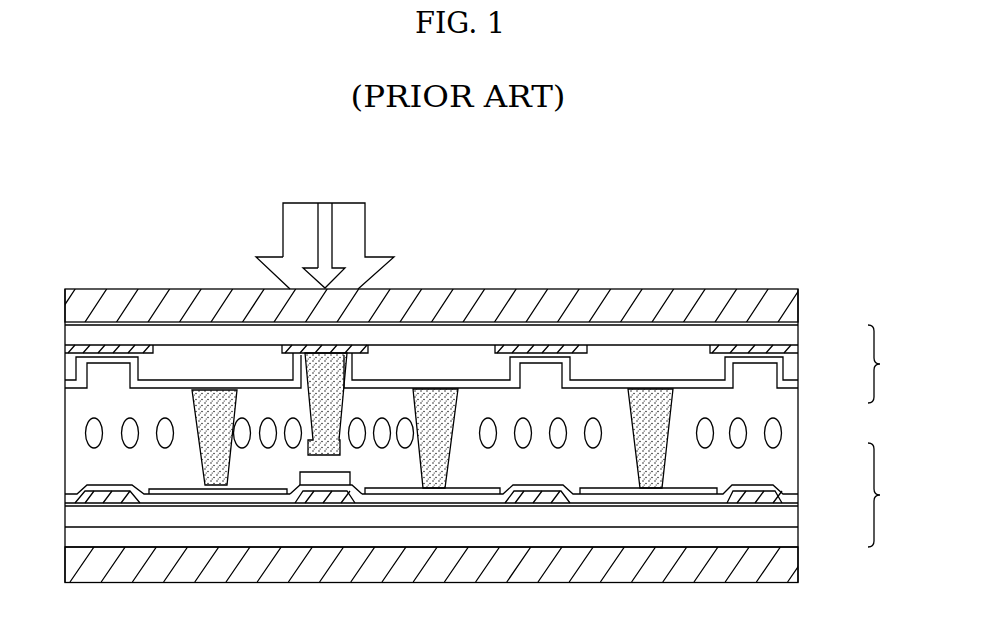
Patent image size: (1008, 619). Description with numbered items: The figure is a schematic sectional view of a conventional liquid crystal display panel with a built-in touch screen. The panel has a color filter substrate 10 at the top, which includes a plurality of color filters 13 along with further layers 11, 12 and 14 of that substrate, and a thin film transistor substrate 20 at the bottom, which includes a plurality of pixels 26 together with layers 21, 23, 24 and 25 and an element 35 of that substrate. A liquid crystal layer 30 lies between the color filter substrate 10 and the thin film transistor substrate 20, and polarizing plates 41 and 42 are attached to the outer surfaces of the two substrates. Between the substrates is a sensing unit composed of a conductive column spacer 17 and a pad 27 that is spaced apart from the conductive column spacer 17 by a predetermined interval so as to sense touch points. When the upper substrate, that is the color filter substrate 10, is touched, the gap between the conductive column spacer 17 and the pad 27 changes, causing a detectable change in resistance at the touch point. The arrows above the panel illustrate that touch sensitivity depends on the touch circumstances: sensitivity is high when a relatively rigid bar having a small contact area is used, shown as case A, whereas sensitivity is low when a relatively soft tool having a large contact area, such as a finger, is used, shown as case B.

The polarizing plate 41 is at (793, 303).
The upper substrate 11 is at (793, 330).
The black matrix 12 is at (793, 347).
The color filter 13 is at (707, 372).
The overcoat layer 14 is at (737, 383).
The color filter substrate 10 is at (888, 364).
The conductive column spacer 17 is at (312, 368).
The liquid crystal layer 30 is at (85, 427).
The pad 27 is at (302, 476).
The drain electrode 35 is at (300, 474).
The pixel 26 is at (693, 488).
The passivation layer 25 is at (760, 494).
The gate electrode 24 is at (777, 498).
The gate insulating layer 23 is at (793, 520).
The lower substrate 21 is at (793, 541).
The thin film transistor substrate 20 is at (888, 495).
The polarizing plate 42 is at (793, 568).
The case A is at (330, 205).
The case B is at (362, 230).